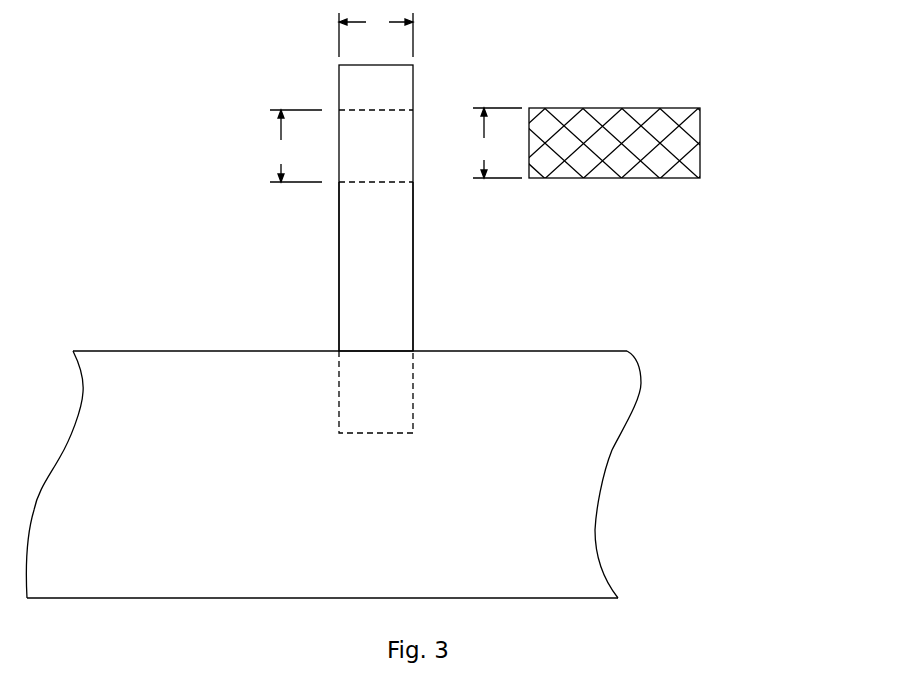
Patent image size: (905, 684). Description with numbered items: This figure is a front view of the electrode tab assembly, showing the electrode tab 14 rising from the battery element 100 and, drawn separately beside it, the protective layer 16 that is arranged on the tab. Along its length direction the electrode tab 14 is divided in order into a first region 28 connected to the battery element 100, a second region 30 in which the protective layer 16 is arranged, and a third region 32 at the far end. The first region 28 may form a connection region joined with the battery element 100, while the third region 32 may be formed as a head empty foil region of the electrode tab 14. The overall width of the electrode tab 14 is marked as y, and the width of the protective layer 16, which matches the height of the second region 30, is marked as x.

The electrode tab 14 is at (92, 48).
The third region 32 is at (370, 94).
The second region 30 is at (365, 159).
The first region 28 is at (372, 267).
The protective layer 16 is at (675, 140).
The battery element 100 is at (512, 432).